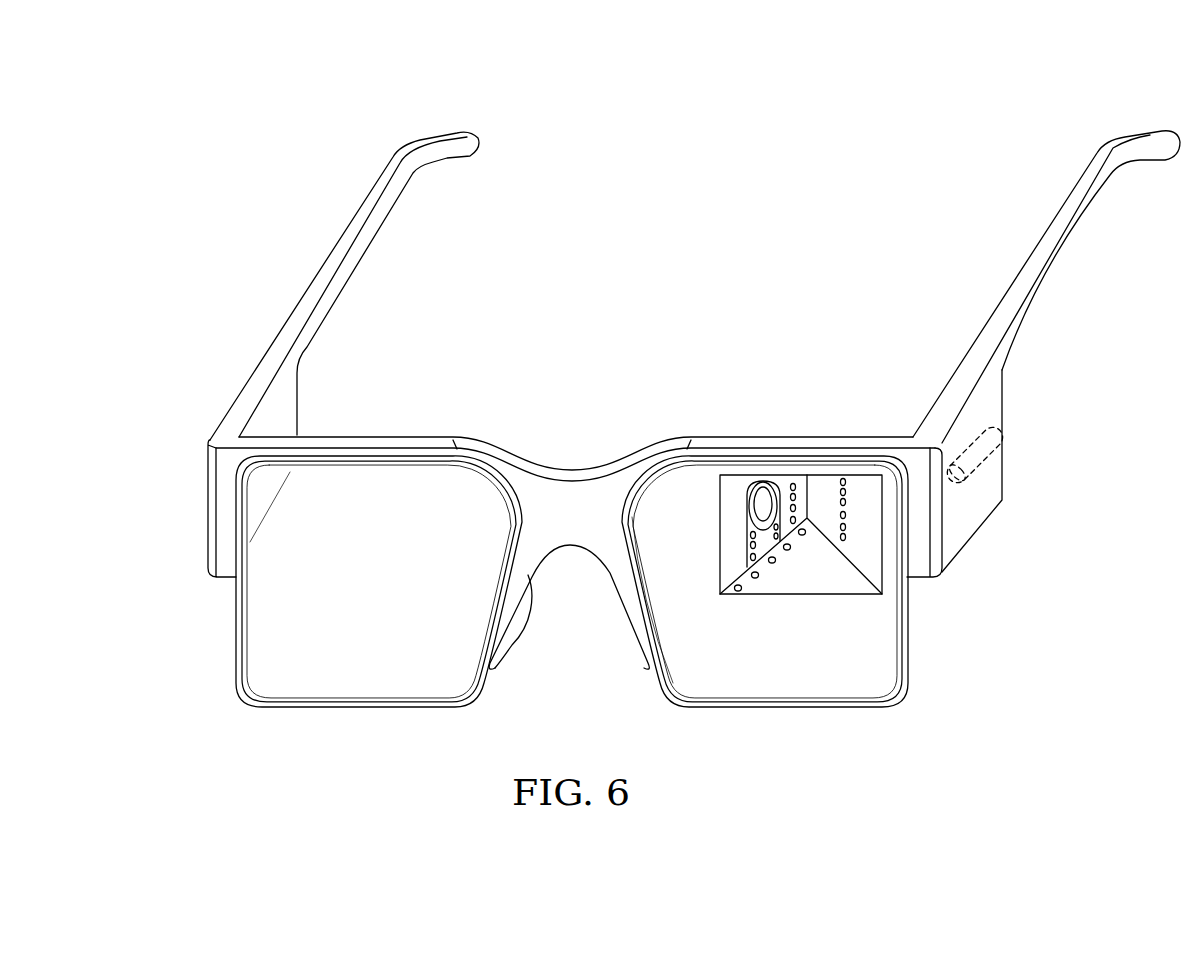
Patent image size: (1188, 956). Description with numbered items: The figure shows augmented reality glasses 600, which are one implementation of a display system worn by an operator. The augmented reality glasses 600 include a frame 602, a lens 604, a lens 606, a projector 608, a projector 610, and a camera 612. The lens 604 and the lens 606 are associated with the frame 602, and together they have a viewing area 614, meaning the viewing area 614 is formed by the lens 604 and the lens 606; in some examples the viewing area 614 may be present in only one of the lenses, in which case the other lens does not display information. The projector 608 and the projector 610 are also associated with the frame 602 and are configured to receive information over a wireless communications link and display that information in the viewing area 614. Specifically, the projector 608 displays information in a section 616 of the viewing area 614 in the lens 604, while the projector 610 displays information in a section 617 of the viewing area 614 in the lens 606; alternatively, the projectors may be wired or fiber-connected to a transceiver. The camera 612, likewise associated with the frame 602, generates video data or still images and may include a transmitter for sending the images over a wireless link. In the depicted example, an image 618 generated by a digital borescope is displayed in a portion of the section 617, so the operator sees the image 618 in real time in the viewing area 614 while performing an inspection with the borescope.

The augmented reality glasses 600 is at (890, 109).
The frame 602 is at (371, 180).
The lens 604 is at (358, 710).
The lens 606 is at (783, 710).
The projector 608 is at (209, 510).
The projector 610 is at (960, 538).
The camera 612 is at (992, 425).
The viewing area 614 is at (370, 477).
The section 616 is at (305, 683).
The section 617 is at (835, 683).
The image 618 is at (802, 595).